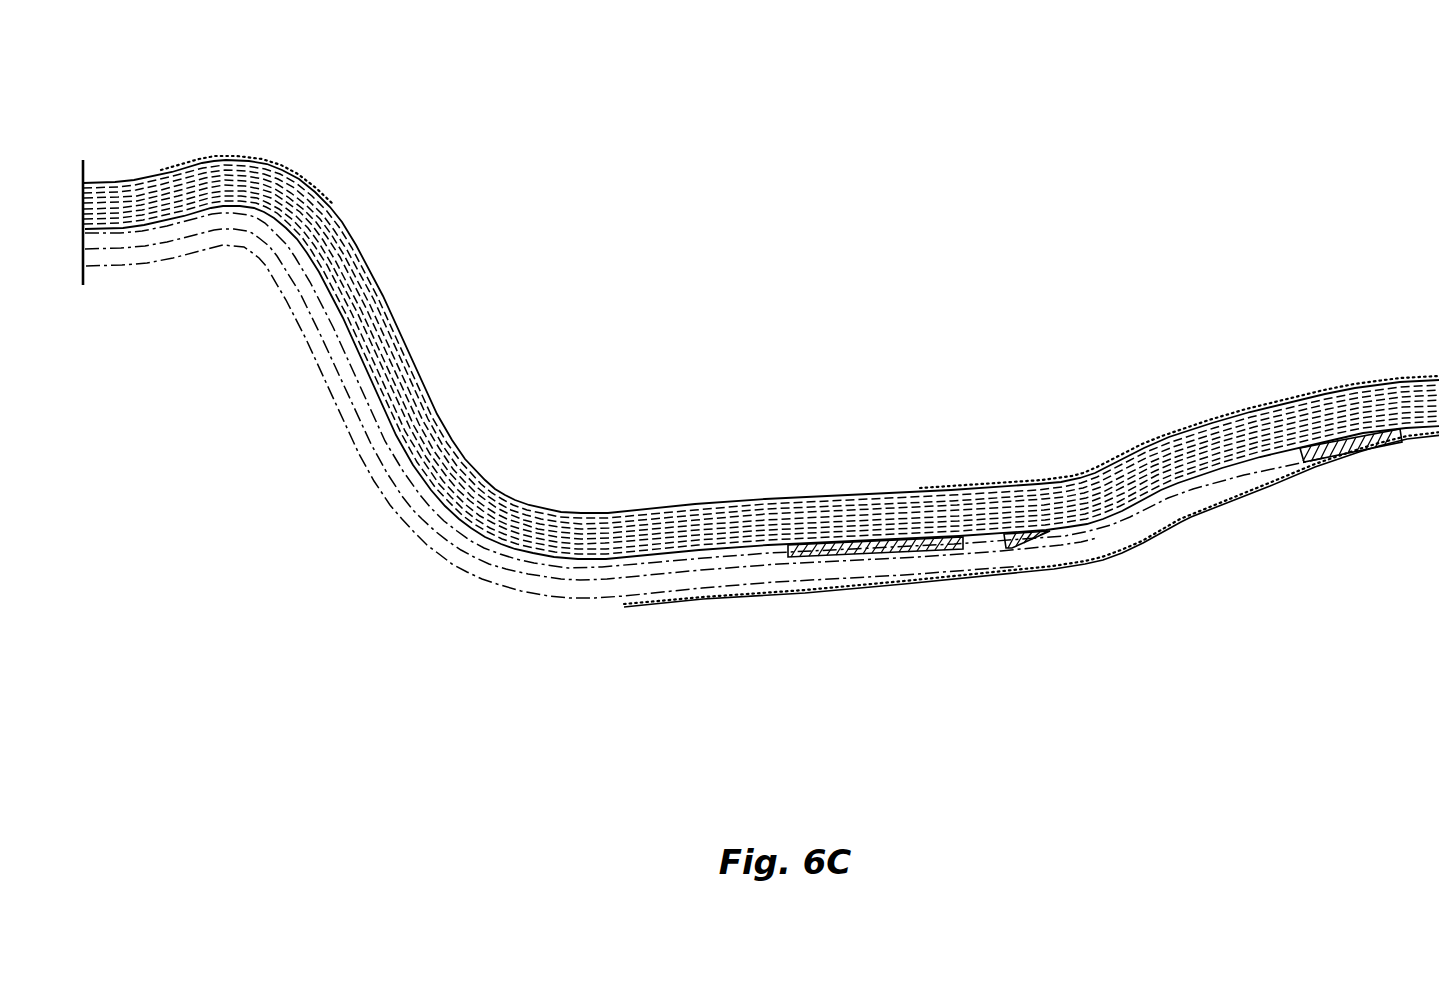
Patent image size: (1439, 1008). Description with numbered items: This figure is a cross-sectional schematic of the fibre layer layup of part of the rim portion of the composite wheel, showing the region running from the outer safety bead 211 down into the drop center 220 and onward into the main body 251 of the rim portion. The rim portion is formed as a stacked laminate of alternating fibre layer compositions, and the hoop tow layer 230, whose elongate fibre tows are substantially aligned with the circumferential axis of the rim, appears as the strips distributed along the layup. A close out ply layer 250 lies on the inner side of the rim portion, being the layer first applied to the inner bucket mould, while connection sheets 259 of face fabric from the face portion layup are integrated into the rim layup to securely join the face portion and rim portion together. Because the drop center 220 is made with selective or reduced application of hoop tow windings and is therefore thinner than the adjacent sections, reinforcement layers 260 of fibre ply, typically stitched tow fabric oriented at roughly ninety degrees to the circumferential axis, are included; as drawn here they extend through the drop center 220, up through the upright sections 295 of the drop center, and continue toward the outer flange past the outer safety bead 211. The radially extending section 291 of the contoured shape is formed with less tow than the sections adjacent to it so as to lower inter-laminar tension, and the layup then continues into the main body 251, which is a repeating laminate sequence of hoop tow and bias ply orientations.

The outer safety bead 211 is at (243, 133).
The drop center 220 is at (793, 368).
The hoop tow layer 230 is at (757, 600).
The close out ply layer 250 is at (676, 604).
The main body 251 is at (1390, 330).
The connection sheets 259 is at (465, 562).
The reinforcement layer 260 is at (325, 212).
The radially extending section 291 is at (428, 313).
The upright section of the drop center 295 is at (483, 343).